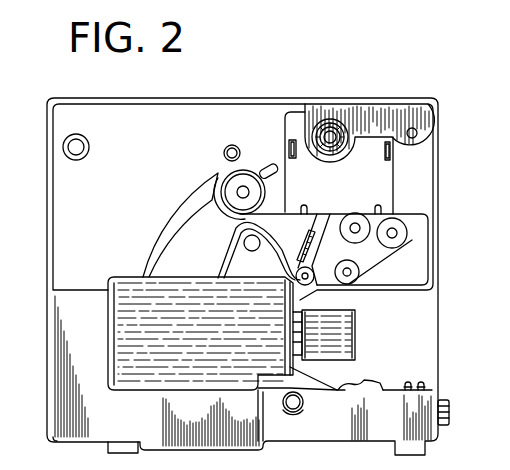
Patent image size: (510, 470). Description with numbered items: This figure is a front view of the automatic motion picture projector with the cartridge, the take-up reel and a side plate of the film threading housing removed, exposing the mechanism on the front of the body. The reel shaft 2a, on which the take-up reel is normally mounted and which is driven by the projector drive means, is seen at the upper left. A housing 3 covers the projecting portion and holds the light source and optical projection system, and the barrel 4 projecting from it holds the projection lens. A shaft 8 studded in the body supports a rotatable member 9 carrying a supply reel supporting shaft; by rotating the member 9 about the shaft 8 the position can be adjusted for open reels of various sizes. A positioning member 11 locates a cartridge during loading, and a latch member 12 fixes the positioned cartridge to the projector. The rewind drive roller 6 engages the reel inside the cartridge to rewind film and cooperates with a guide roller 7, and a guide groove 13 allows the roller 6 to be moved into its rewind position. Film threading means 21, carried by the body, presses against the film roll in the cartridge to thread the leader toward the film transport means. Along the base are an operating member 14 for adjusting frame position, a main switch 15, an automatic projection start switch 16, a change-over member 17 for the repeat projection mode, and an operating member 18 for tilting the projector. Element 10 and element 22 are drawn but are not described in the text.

The reel shaft 2a is at (82, 133).
The housing 3 is at (210, 330).
The barrel 4 is at (352, 327).
The rewind drive roller 6 is at (247, 170).
The guide roller 7 is at (232, 145).
The shaft 8 is at (413, 127).
The rotatable member 9 is at (383, 118).
The bearing 10 is at (331, 118).
The positioning member 11 is at (377, 204).
The latch member 12 is at (292, 138).
The guide groove 13 is at (270, 165).
The operating member 14 is at (303, 402).
The main switch 15 is at (355, 383).
The automatic projection start switch 16 is at (408, 382).
The change-over member 17 is at (422, 382).
The operating member 18 is at (450, 412).
The film threading means 21 is at (398, 238).
The lever 22 is at (325, 212).